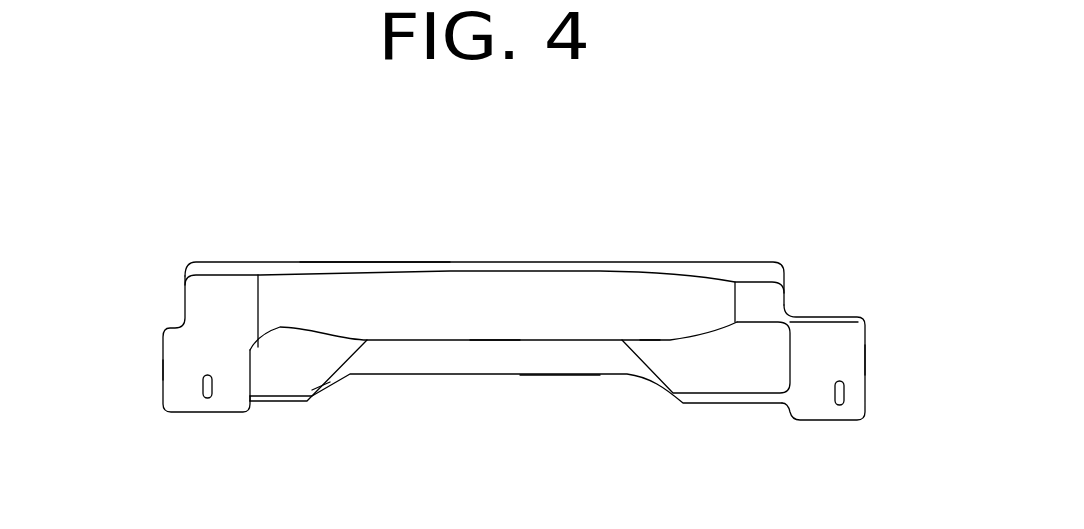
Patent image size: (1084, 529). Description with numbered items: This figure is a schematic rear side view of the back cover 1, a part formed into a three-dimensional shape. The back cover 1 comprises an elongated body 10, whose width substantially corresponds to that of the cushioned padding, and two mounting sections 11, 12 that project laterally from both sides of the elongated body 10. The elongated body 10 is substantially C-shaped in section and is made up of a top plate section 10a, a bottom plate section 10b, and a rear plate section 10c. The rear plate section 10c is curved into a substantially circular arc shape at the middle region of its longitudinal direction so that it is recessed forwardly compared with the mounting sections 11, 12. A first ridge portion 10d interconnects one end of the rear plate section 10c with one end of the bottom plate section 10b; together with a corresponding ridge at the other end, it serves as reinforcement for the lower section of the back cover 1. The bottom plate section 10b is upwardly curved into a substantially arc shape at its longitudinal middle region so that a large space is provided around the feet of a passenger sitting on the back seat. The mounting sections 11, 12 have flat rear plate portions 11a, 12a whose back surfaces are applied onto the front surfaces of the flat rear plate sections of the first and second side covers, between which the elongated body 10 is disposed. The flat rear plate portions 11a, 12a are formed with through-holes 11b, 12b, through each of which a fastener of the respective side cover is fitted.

The back cover 1 is at (645, 252).
The elongated body 10 is at (487, 254).
The top plate section 10a is at (372, 261).
The bottom plate section 10b is at (565, 365).
The rear plate section 10c is at (488, 315).
The first ridge portion 10d is at (308, 367).
The mounting section 11 is at (182, 309).
The flat rear plate portion 11a is at (180, 367).
The through-hole 11b is at (207, 398).
The mounting section 12 is at (832, 312).
The flat rear plate portion 12a is at (853, 357).
The through-hole 12b is at (838, 406).